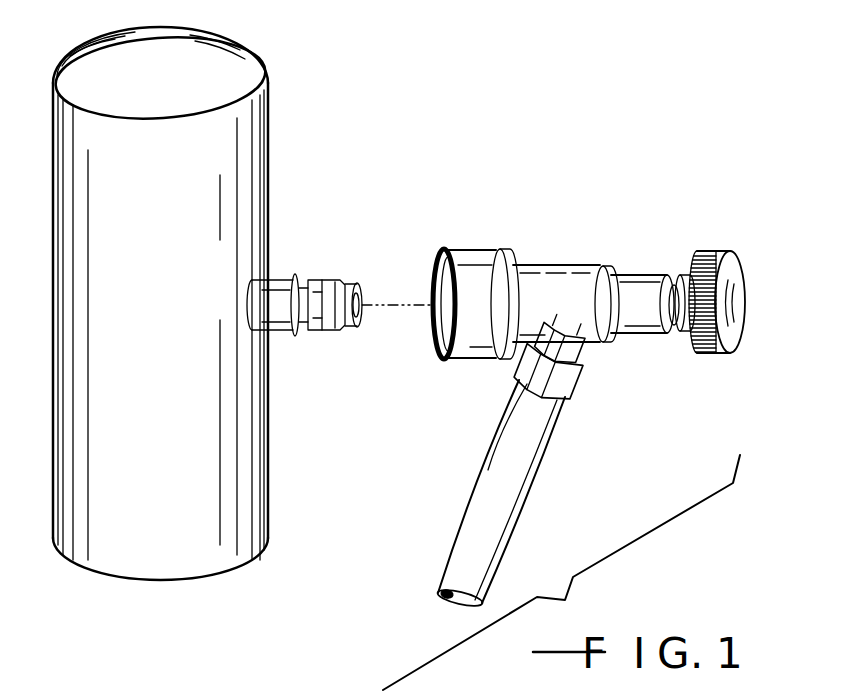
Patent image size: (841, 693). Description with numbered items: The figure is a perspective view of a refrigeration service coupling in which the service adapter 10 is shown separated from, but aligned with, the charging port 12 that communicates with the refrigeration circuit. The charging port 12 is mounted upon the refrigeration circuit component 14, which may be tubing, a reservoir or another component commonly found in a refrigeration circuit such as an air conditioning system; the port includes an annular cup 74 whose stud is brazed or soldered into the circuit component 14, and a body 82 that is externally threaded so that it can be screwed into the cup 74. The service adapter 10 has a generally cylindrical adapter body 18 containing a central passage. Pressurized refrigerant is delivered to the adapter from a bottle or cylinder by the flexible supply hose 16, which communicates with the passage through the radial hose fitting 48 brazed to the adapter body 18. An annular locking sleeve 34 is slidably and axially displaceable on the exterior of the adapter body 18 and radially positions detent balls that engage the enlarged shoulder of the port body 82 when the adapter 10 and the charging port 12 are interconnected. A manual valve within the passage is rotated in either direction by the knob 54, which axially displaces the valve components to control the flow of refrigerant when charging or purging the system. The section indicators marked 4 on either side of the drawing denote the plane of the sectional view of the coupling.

The section line 4- 4 is at (230, 305).
The service adapter 10 is at (600, 392).
The charging port 12 is at (339, 286).
The refrigeration circuit component 14 is at (172, 467).
The flexible supply hose 16 is at (522, 492).
The adapter body 18 is at (575, 277).
The locking sleeve 34 is at (473, 250).
The radial hose fitting 48 is at (589, 352).
The knob 54 is at (735, 338).
The annular cup 74 is at (280, 336).
The body 82 is at (303, 249).